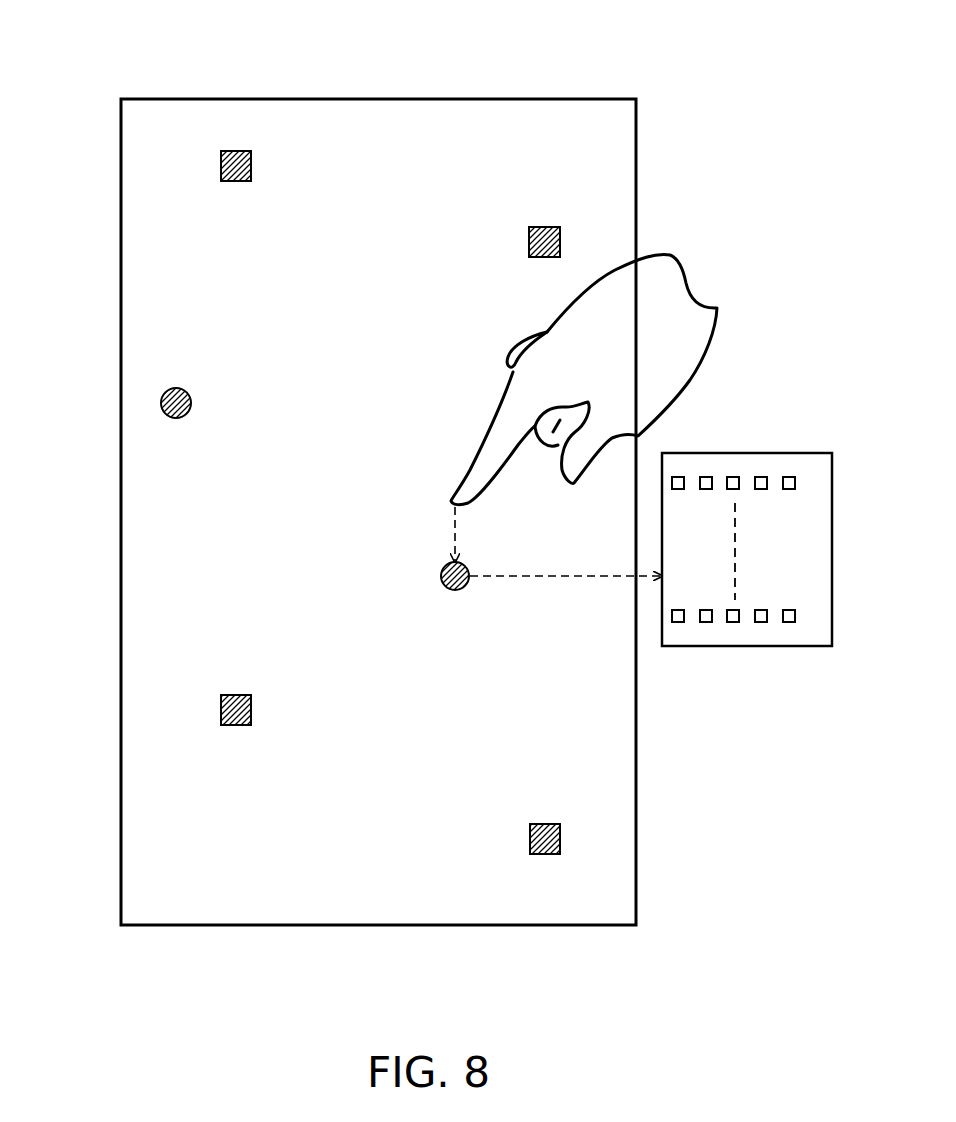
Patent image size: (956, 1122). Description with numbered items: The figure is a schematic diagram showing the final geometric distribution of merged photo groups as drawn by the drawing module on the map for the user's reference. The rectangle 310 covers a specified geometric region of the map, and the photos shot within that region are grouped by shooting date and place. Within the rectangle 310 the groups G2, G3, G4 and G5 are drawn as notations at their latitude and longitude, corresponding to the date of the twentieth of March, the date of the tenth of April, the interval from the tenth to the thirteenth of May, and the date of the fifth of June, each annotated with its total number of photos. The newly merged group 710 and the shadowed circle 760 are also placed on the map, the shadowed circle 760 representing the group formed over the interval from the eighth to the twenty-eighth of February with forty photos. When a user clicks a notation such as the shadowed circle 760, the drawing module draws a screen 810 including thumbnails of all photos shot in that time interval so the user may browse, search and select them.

The rectangle 310 is at (378, 99).
The newly merged group 710 is at (560, 242).
The shadowed circle 760 is at (460, 590).
The screen 810 is at (785, 453).
The CDFG group G2 is at (221, 710).
The CDFG group G3 is at (221, 165).
The CDFG group G4 is at (161, 403).
The CDFG group G5 is at (560, 838).